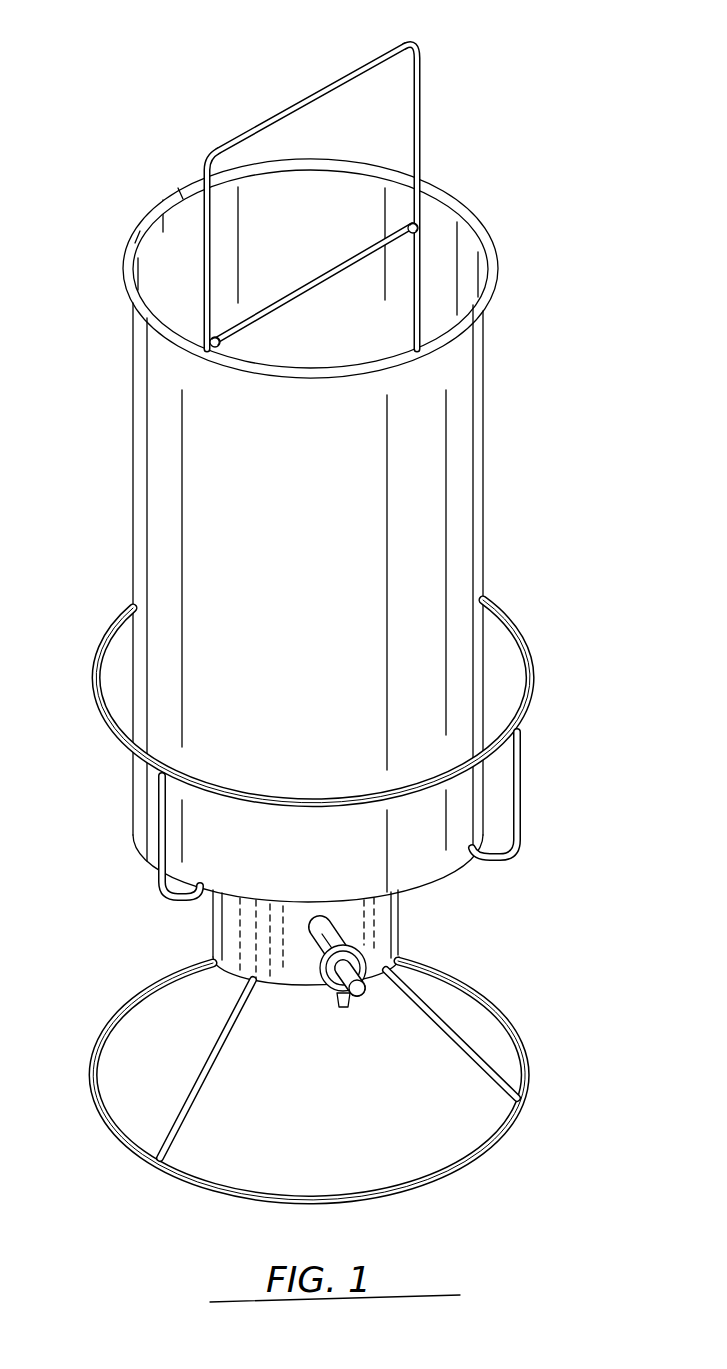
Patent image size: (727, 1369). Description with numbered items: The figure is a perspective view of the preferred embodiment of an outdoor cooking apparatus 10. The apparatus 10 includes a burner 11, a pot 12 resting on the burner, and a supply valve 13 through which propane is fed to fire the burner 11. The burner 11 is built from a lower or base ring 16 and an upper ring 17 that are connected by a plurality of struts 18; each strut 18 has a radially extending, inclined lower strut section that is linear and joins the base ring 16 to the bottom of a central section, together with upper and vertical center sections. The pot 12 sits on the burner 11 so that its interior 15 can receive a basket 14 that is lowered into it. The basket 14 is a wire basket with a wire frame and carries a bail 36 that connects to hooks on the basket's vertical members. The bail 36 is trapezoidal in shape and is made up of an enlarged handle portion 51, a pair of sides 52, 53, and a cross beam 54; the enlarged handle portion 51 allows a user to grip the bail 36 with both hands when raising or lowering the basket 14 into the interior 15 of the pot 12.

The outdoor cooking apparatus 10 is at (325, 602).
The burner 11 is at (311, 900).
The pot 12 is at (310, 543).
The supply valve 13 is at (336, 988).
The basket 14 is at (319, 283).
The interior 15 is at (297, 200).
The lower ring 16 is at (477, 992).
The upper ring 17 is at (525, 662).
The strut 18 is at (522, 817).
The bail 36 is at (315, 176).
The handle portion 51 is at (291, 100).
The side 52 is at (199, 237).
The side 53 is at (422, 117).
The cross beam 54 is at (323, 277).